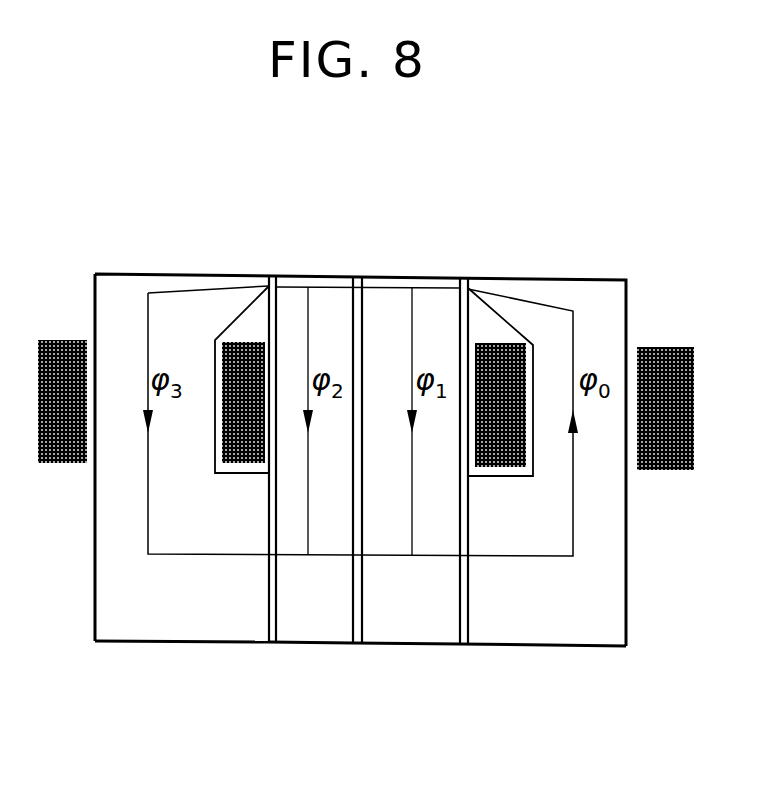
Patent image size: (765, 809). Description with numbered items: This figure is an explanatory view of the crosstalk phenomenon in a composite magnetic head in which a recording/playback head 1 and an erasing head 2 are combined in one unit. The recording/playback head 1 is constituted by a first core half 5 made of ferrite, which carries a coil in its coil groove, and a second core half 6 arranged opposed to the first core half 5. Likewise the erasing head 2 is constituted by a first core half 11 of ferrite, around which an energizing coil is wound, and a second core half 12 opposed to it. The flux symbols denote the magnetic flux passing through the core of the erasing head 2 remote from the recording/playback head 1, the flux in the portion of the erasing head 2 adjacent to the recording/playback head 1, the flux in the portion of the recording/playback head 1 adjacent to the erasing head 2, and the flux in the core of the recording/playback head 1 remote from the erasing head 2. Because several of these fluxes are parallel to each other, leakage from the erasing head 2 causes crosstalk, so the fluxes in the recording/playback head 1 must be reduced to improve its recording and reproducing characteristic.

The recording/playback head 1 is at (172, 258).
The erasing head 2 is at (549, 258).
The first core half 5 is at (138, 632).
The second core half 6 is at (307, 632).
The second core half 12 is at (417, 634).
The first core half 11 is at (560, 636).